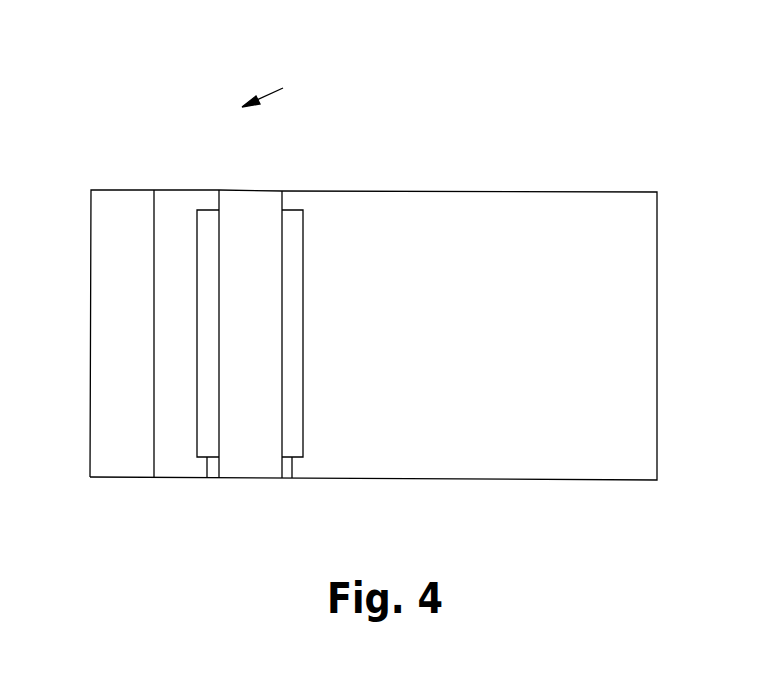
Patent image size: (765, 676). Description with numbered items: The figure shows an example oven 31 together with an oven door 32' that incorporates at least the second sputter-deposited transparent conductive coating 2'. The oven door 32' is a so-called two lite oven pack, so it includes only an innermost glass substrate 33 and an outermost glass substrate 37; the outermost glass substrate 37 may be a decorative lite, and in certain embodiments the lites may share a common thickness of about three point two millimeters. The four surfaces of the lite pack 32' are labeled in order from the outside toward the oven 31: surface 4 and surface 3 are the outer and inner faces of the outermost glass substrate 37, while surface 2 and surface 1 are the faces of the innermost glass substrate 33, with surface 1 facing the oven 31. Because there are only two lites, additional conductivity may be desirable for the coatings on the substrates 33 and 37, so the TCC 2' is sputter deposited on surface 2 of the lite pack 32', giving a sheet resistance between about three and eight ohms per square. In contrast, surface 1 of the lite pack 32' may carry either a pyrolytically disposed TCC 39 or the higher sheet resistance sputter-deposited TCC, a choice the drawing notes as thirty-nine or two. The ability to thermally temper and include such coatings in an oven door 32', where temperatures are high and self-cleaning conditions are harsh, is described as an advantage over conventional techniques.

The oven door 32' is at (286, 81).
The outermost glass substrate 37 is at (122, 190).
The innermost glass substrate 33 is at (252, 190).
The surface 4 is at (106, 333).
The surface 3 is at (143, 333).
The surface 2 is at (231, 334).
The surface 1 is at (271, 334).
The second sputter-deposited transparent conductive coating 2' is at (218, 380).
The pyrolytically disposed TCC 39 is at (292, 478).
The oven 31 is at (373, 335).